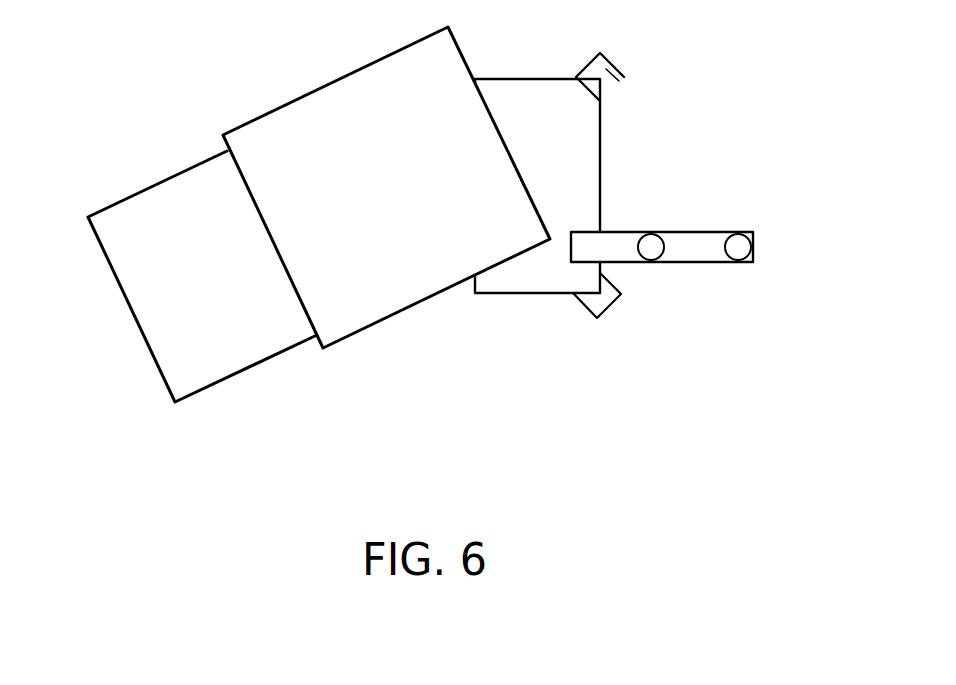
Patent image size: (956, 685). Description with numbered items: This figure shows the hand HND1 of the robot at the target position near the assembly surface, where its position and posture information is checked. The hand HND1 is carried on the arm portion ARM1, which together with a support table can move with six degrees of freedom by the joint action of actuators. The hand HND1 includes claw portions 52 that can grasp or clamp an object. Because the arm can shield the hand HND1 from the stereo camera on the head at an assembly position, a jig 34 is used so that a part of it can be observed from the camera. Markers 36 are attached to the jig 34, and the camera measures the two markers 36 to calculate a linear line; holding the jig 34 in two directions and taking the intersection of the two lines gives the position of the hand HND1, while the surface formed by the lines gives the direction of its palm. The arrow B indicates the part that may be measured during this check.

The arm portion ARM1 is at (157, 184).
The hand HND1 is at (600, 143).
The claw portion 52 is at (624, 78).
The jig 34 is at (698, 243).
The marker 36 is at (651, 261).
The arrow B is at (580, 341).